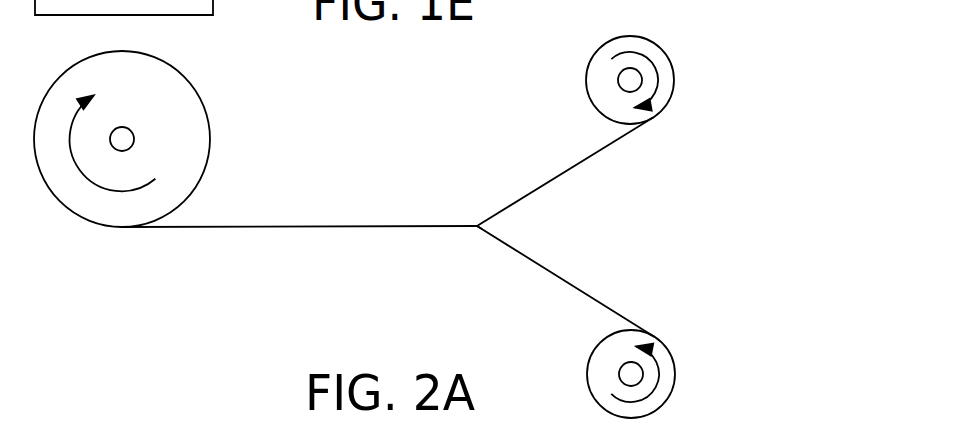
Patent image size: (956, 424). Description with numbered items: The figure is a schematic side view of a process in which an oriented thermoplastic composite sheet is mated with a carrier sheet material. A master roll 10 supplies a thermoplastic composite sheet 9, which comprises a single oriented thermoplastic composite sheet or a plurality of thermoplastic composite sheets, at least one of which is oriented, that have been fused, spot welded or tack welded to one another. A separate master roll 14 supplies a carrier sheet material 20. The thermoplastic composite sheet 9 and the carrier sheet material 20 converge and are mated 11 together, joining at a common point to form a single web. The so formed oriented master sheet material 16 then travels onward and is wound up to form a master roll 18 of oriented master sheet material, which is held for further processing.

The master roll of oriented master sheet material 18 is at (225, 101).
The master roll 10 is at (690, 60).
The master roll 14 is at (695, 361).
The oriented master sheet material 16 is at (356, 210).
The thermoplastic composite sheet 9 is at (525, 160).
The carrier sheet material 20 is at (500, 277).
The mating 11 is at (487, 228).